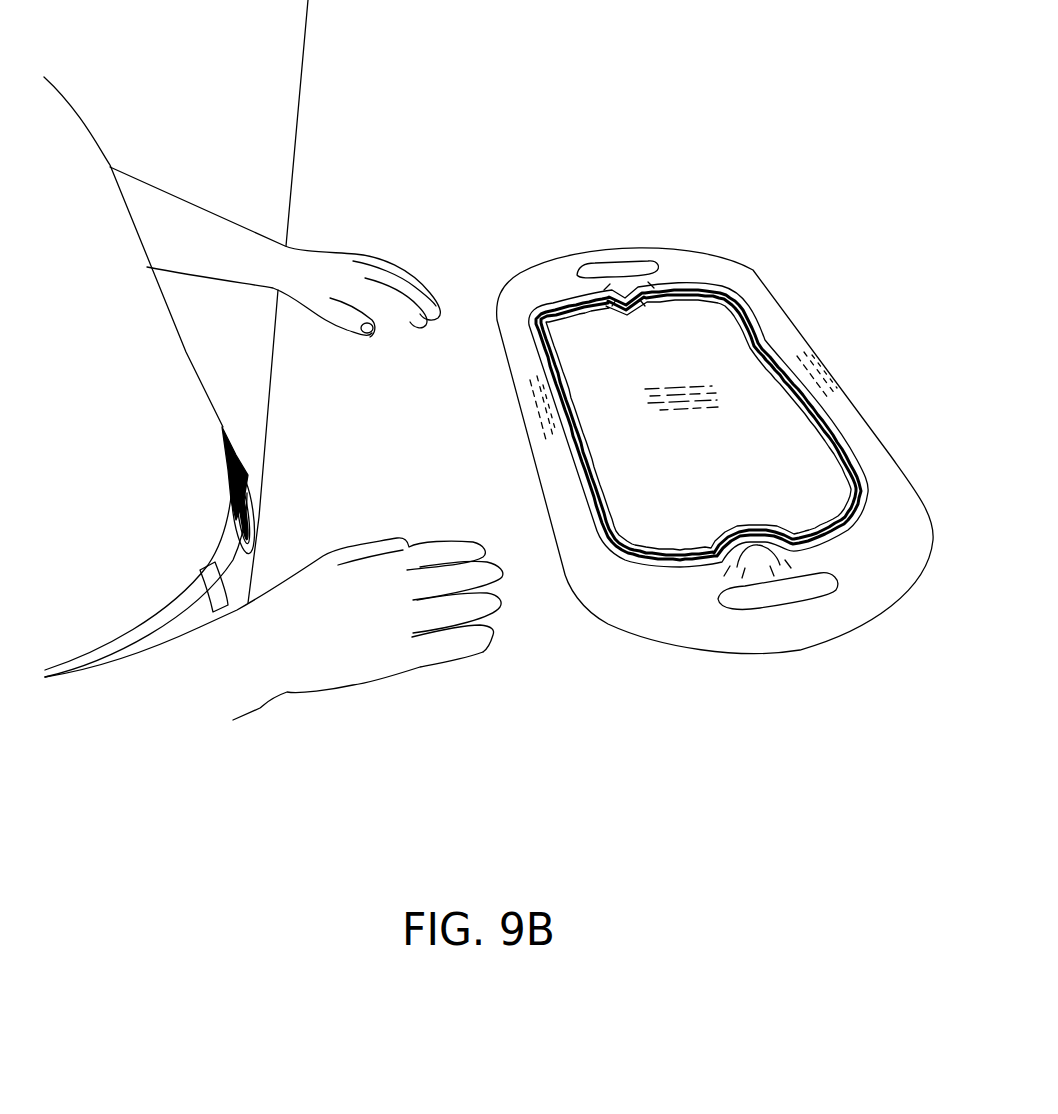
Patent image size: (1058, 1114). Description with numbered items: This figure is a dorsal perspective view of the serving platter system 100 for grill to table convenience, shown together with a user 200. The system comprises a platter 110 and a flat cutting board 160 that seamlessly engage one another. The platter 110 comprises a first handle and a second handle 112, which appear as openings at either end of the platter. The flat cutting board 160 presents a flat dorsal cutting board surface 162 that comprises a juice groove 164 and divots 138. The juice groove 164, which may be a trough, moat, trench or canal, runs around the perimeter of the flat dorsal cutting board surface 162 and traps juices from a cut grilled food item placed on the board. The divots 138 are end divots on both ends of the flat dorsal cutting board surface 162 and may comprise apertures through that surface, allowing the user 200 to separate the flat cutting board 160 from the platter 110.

The serving platter system 100 is at (860, 283).
The platter 110 is at (758, 265).
The second handle 112 is at (598, 273).
The divots 138 is at (627, 300).
The flat cutting board 160 is at (541, 297).
The flat dorsal cutting board surface 162 is at (688, 317).
The juice groove 164 is at (543, 353).
The user 200 is at (72, 100).